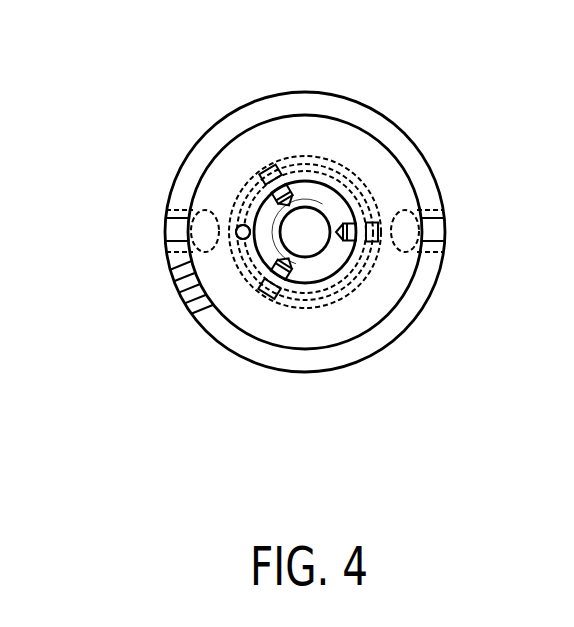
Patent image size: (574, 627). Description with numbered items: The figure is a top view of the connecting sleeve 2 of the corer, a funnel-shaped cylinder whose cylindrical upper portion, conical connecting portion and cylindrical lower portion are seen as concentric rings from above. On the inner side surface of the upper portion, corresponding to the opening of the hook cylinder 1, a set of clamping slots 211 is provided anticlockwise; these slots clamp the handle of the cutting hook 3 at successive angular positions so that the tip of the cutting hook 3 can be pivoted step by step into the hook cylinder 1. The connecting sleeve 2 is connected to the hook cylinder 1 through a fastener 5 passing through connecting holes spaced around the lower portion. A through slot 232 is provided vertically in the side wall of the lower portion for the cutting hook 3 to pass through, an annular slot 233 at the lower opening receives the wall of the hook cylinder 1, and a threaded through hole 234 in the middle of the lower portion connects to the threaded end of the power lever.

The hook cylinder 1 is at (343, 294).
The connecting sleeve 2 is at (298, 363).
The cutting hook 3 is at (238, 224).
The fastener 5 is at (278, 157).
The clamping slot 211 is at (177, 282).
The through slot 232 is at (238, 237).
The annular slot 233 is at (250, 262).
The threaded through hole 234 is at (325, 205).